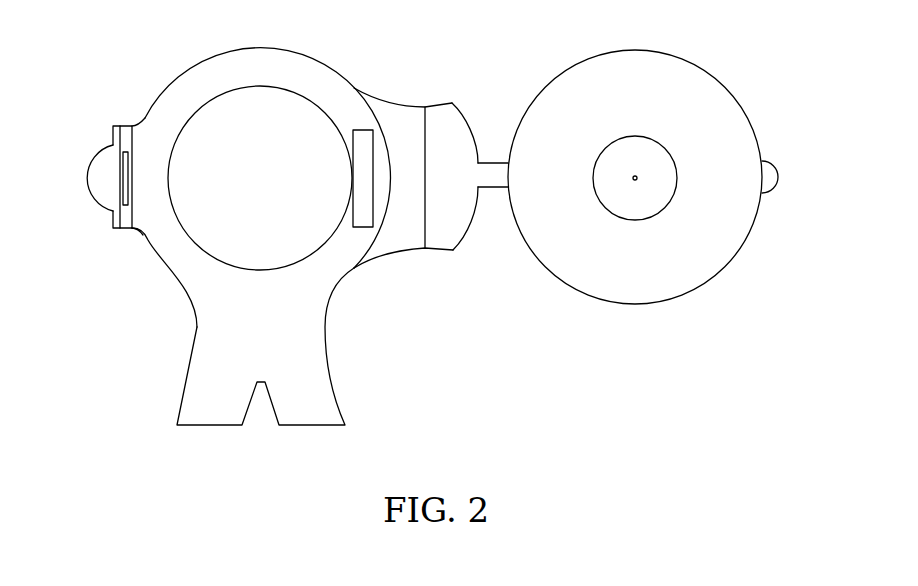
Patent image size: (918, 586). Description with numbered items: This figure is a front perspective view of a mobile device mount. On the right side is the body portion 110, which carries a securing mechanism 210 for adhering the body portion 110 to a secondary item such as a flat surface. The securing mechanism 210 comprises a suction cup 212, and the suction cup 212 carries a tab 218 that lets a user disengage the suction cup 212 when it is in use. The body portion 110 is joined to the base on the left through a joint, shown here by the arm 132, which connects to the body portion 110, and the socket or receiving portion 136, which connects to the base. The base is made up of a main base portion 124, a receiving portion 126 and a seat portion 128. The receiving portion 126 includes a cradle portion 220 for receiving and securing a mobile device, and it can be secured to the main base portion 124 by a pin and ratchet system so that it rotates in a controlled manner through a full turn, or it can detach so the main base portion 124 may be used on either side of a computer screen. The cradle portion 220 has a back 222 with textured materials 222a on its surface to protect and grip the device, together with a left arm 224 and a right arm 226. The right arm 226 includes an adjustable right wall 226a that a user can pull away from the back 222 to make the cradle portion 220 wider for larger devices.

The body portion 110 is at (759, 285).
The main base portion 124 is at (395, 245).
The receiving portion 126 is at (185, 252).
The seat portion 128 is at (328, 380).
The arm 132 is at (487, 186).
The receiving portion 136 is at (440, 112).
The securing mechanism 210 is at (634, 302).
The suction cup 212 is at (653, 103).
The tab 218 is at (775, 178).
The cradle portion 220 is at (393, 47).
The back 222 is at (257, 181).
The textured materials 222a is at (125, 175).
The left arm 224 is at (377, 167).
The right arm 226 is at (97, 190).
The right wall 226a is at (128, 126).